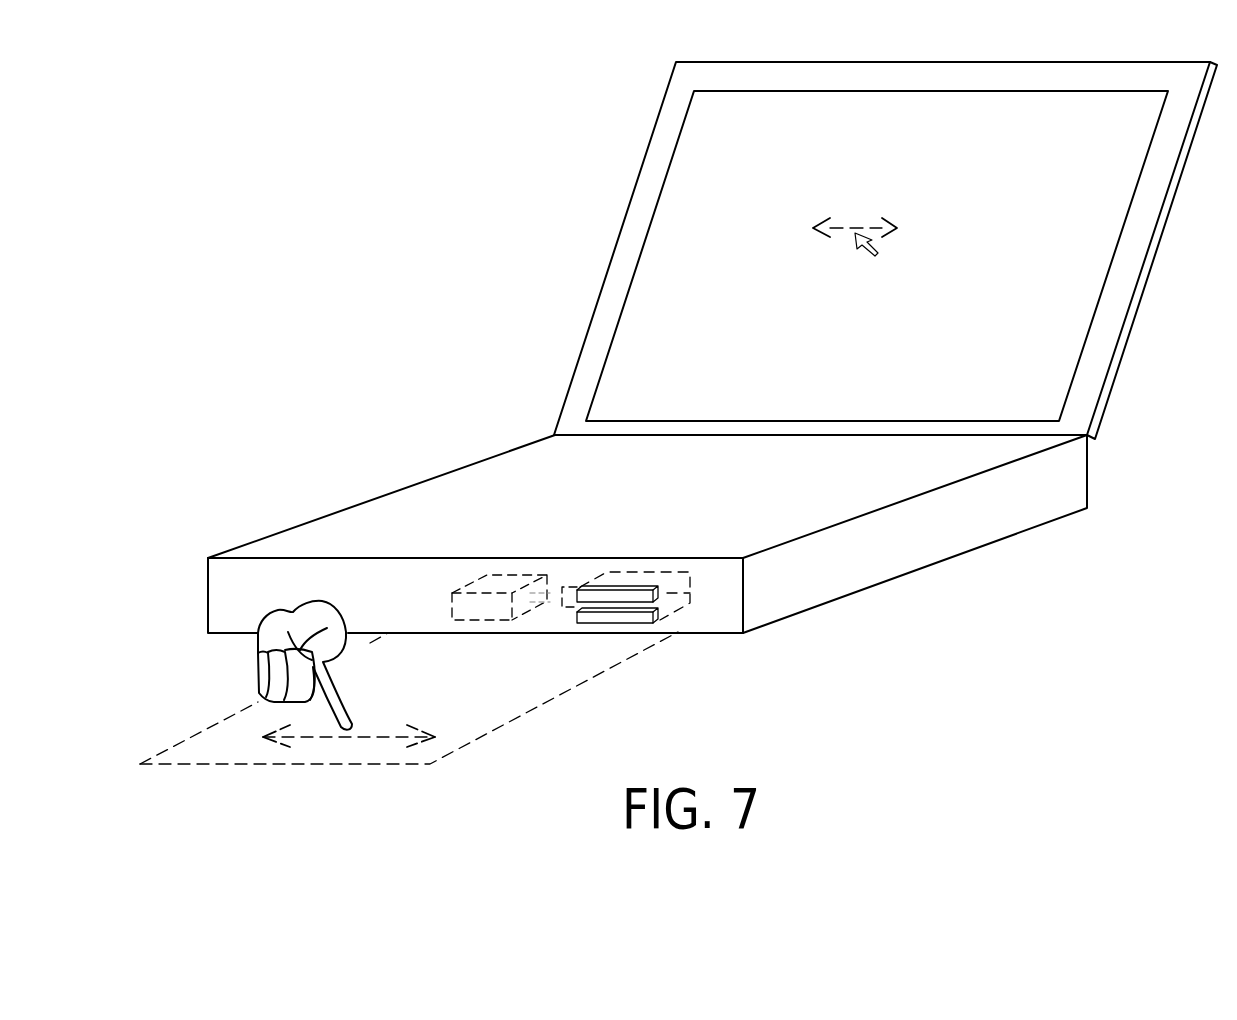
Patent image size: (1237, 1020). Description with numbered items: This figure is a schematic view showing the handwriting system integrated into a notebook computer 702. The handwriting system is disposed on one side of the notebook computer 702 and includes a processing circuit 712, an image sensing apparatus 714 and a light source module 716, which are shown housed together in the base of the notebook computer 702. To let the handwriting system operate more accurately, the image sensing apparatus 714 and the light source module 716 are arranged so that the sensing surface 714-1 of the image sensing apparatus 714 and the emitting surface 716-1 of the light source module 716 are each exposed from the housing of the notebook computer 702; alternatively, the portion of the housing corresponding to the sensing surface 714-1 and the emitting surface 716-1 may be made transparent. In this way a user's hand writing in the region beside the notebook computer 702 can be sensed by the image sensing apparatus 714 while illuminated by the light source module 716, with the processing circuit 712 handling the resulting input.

The notebook computer 702 is at (1070, 482).
The processing circuit 712 is at (513, 585).
The image sensing apparatus 714 is at (680, 613).
The sensing surface 714-1 is at (615, 620).
The light source module 716 is at (690, 572).
The emitting surface 716-1 is at (640, 595).